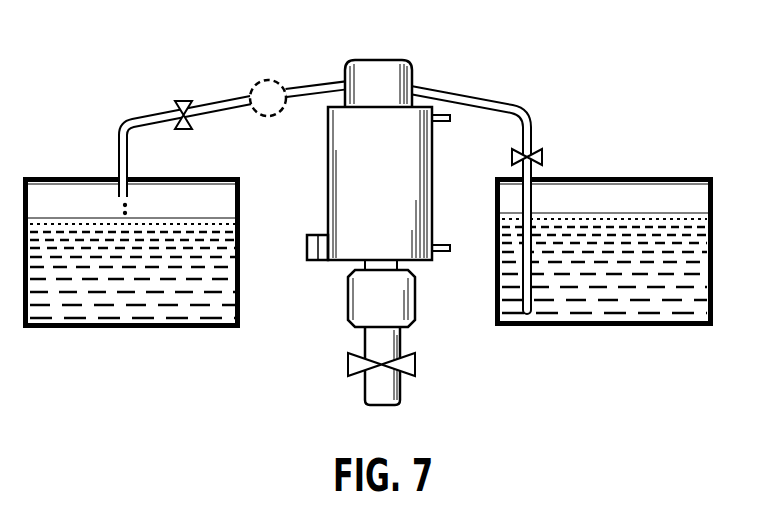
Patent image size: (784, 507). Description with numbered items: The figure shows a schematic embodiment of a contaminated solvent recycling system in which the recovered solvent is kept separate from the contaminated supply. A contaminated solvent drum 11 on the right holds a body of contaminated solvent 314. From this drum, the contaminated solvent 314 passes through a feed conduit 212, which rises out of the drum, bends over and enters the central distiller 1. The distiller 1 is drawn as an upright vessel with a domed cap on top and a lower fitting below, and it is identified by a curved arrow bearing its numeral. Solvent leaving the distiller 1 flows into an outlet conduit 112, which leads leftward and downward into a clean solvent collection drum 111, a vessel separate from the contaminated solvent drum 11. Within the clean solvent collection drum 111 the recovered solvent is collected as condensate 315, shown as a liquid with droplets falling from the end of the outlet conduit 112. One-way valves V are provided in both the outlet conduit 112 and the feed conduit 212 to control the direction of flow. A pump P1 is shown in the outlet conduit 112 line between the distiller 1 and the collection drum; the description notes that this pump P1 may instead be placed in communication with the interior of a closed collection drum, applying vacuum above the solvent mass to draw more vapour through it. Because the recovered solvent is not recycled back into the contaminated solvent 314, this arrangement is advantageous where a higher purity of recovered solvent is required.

The distiller 1 is at (318, 205).
The pump P1 is at (275, 96).
The one-way valve V is at (176, 100).
The contaminated solvent drum 11 is at (713, 260).
The clean solvent collection drum 111 is at (197, 328).
The outlet conduit 112 is at (210, 103).
The feed conduit 212 is at (533, 128).
The contaminated solvent 314 is at (628, 276).
The condensate 315 is at (153, 280).